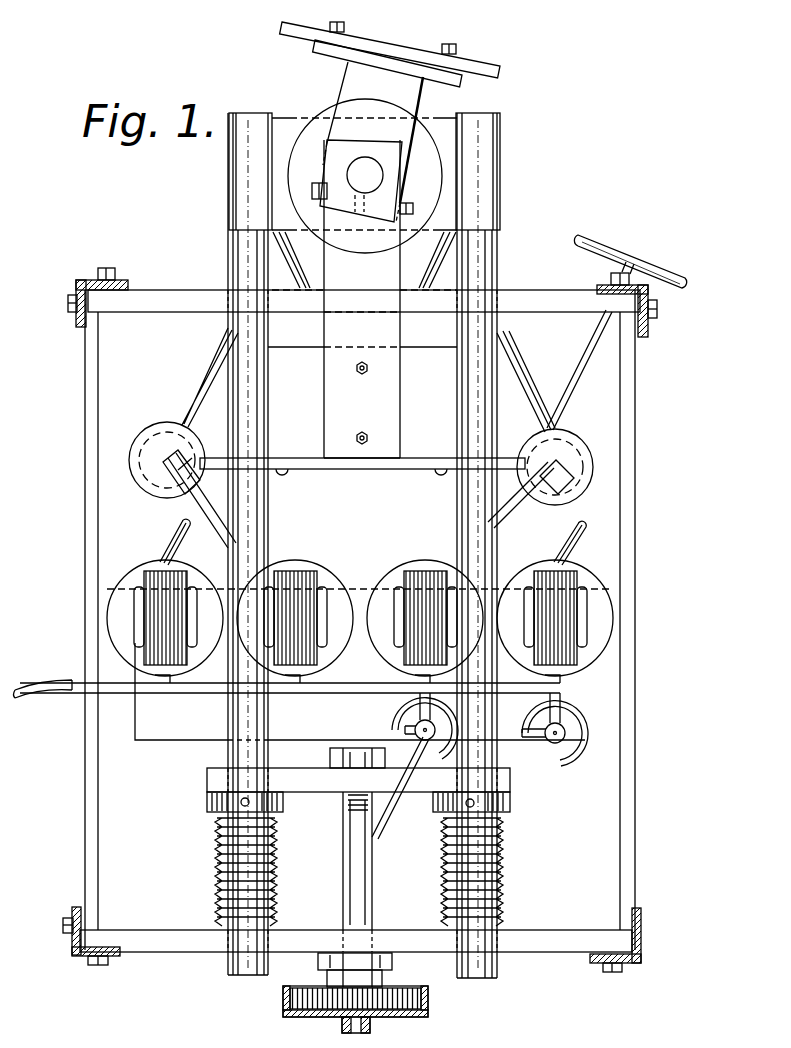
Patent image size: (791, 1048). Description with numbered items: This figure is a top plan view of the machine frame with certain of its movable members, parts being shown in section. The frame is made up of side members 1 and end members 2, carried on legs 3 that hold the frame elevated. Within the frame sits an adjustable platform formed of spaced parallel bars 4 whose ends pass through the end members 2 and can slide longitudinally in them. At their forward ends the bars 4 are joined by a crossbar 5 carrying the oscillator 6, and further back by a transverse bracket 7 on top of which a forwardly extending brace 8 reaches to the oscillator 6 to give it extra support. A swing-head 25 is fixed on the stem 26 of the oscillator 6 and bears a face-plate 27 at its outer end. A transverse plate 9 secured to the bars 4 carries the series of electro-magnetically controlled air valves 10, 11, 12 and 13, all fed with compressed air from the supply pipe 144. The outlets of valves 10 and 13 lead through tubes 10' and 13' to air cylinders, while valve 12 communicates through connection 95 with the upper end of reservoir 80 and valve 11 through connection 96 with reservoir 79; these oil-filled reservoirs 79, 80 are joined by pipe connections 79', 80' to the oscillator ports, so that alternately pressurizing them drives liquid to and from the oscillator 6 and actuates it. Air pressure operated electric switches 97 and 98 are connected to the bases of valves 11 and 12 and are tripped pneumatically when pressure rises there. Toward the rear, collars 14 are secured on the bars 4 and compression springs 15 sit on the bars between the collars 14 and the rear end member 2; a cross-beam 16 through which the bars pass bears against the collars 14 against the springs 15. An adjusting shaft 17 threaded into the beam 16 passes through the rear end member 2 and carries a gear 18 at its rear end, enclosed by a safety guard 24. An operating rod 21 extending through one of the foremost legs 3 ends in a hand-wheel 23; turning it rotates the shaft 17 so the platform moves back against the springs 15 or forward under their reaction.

The side member 1 is at (84, 800).
The end member 2 is at (158, 292).
The leg 3 is at (76, 312).
The parallel bar 4 is at (230, 253).
The crossbar 5 is at (364, 201).
The oscillator 6 is at (365, 176).
The bracket 7 is at (434, 358).
The brace 8 is at (401, 270).
The plate 9 is at (360, 691).
The air valve 10 is at (165, 608).
The tube 10' is at (164, 536).
The air valve 11 is at (335, 574).
The air valve 12 is at (420, 562).
The air valve 13 is at (557, 612).
The tube 13' is at (570, 539).
The collar 14 is at (206, 800).
The compression spring 15 is at (214, 846).
The cross-beam 16 is at (308, 778).
The adjusting shaft 17 is at (372, 878).
The gear 18 is at (404, 994).
The operating rod 21 is at (582, 380).
The hand-wheel 23 is at (624, 256).
The safety guard 24 is at (430, 1000).
The swing-head 25 is at (373, 142).
The stem 26 is at (365, 175).
The face-plate 27 is at (482, 76).
The reservoir 79 is at (167, 460).
The pipe connection 79' is at (203, 377).
The reservoir 80 is at (555, 467).
The pipe connection 80' is at (526, 381).
The connection 95 is at (218, 540).
The connection 96 is at (518, 514).
The air pressure operated electric switch 97 is at (425, 727).
The air pressure operated electric switch 98 is at (555, 766).
The supply pipe 144 is at (360, 695).